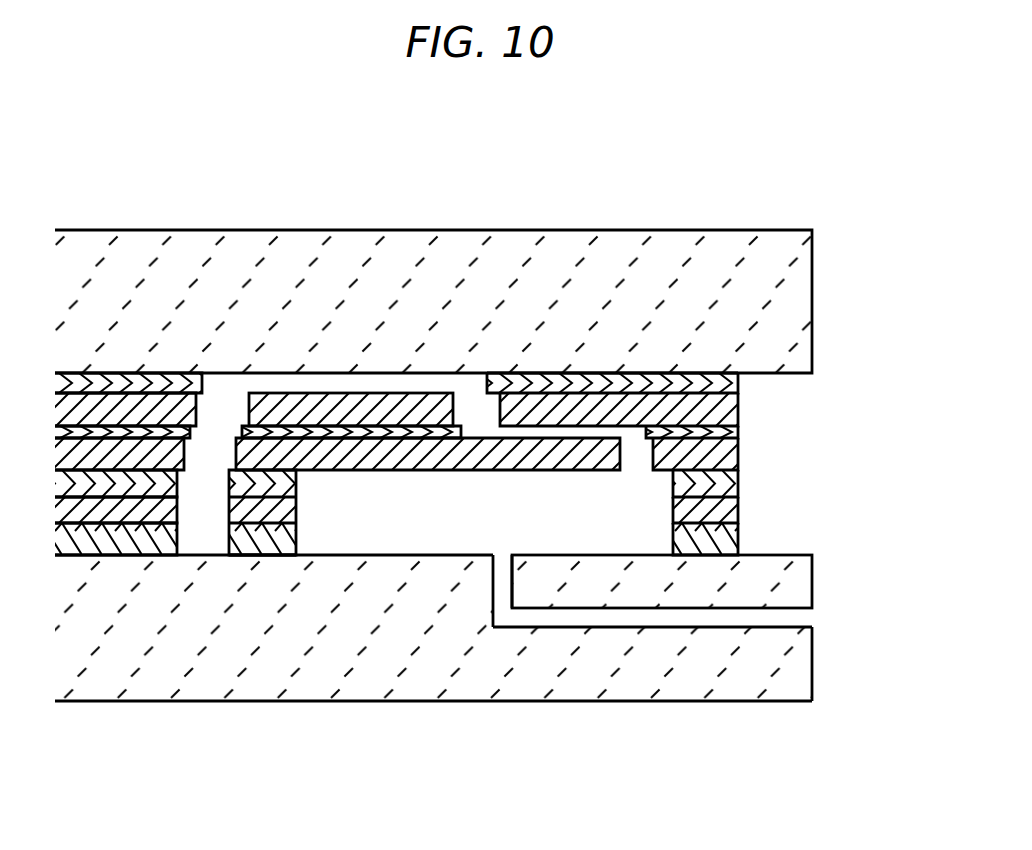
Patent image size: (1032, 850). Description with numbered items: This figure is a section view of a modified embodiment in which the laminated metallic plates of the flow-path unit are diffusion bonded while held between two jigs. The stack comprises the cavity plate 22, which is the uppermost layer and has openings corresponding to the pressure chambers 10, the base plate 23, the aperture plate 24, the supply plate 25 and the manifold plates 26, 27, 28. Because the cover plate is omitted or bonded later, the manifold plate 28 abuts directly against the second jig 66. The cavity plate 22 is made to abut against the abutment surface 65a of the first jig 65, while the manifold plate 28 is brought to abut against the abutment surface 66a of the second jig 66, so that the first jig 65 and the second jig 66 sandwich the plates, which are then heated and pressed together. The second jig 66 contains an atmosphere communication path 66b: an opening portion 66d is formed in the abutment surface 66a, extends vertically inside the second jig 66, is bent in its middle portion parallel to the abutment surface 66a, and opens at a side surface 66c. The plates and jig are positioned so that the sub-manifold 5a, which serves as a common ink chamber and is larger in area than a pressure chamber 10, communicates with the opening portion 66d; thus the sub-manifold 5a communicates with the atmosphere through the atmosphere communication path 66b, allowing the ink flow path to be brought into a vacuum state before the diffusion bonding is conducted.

The pressure chamber 10 is at (302, 393).
The first jig 65 is at (472, 230).
The abutment surface of the first jig 65a is at (598, 380).
The cavity plate 22 is at (738, 377).
The base plate 23 is at (738, 402).
The aperture plate 24 is at (738, 428).
The supply plate 25 is at (738, 453).
The manifold plate 26 is at (738, 478).
The manifold plate 27 is at (738, 504).
The manifold plate 28 is at (738, 530).
The sub-manifold 5a is at (296, 507).
The second jig 66 is at (147, 704).
The abutment surface of the second jig 66a is at (244, 554).
The atmosphere communication path 66b is at (733, 618).
The side surface of the second jig 66c is at (812, 663).
The opening portion 66d is at (504, 557).